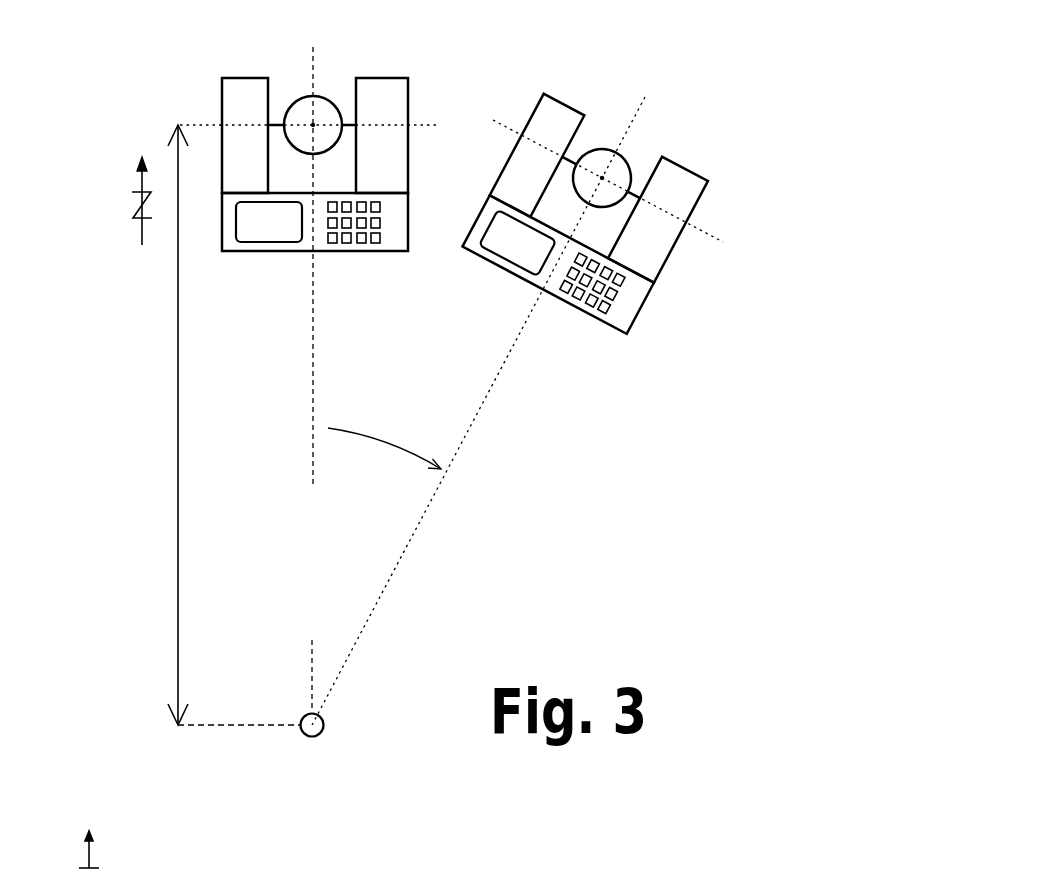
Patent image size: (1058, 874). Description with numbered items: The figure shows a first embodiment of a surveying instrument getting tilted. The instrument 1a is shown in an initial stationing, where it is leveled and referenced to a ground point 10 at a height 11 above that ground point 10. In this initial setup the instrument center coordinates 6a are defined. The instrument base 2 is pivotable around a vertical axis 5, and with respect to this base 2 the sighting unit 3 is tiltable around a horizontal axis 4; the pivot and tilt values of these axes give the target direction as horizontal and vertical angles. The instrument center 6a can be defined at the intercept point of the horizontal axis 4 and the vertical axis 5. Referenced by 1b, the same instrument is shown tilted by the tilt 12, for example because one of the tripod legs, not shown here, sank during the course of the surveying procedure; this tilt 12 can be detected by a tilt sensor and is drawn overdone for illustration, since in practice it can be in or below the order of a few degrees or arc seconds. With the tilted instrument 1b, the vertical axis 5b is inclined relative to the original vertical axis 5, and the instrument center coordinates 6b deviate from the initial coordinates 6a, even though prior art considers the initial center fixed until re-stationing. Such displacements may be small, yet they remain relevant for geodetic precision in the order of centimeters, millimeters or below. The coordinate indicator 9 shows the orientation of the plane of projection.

The instrument in initial stationing 1a is at (258, 172).
The tilted instrument 1b is at (615, 195).
The base 2 is at (321, 263).
The sighting unit 3 is at (362, 83).
The horizontal axis 4 is at (345, 90).
The vertical axis 5 is at (352, 379).
The vertical axis of tilted instrument 5b is at (478, 411).
The instrument center coordinates in initial stationing 6a is at (249, 77).
The instrument center coordinates of tilted instrument 6b is at (684, 145).
The coordinate indicator 9 is at (106, 232).
The ground point 10 is at (356, 702).
The height 11 is at (191, 425).
The tilt 12 is at (397, 418).